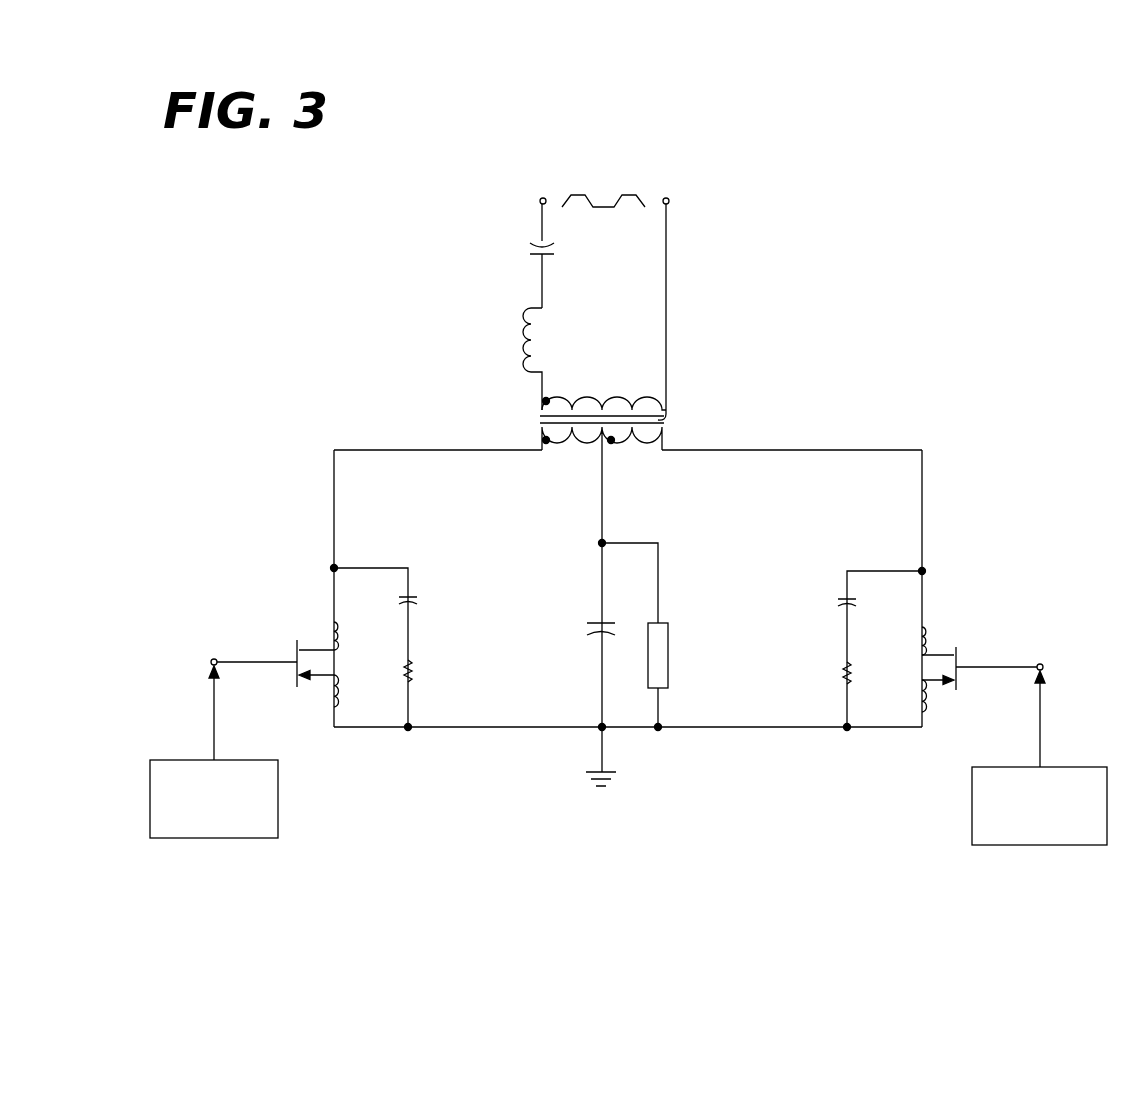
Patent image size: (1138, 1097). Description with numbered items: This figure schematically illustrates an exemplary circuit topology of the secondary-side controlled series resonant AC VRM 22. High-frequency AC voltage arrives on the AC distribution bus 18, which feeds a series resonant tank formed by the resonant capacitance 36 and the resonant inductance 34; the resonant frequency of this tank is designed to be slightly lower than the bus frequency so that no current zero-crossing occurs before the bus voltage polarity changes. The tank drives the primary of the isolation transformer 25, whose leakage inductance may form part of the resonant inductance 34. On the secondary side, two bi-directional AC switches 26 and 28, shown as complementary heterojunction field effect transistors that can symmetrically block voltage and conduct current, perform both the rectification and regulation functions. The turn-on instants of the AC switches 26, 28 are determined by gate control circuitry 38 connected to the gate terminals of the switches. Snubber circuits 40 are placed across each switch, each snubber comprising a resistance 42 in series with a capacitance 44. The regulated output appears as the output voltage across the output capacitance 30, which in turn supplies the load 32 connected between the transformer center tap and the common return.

The AC VRM 22 is at (356, 238).
The AC distribution bus 18 is at (643, 263).
The resonant capacitance 36 is at (549, 256).
The resonant inductance 34 is at (518, 366).
The isolation transformer 25 is at (667, 418).
The AC switch 28 is at (297, 655).
The AC switch 26 is at (957, 660).
The snubber circuit 40 is at (498, 575).
The resistance 42 is at (416, 588).
The capacitance 44 is at (408, 660).
The output capacitance 30 is at (605, 620).
The load 32 is at (672, 635).
The gate control circuitry 38 is at (278, 798).